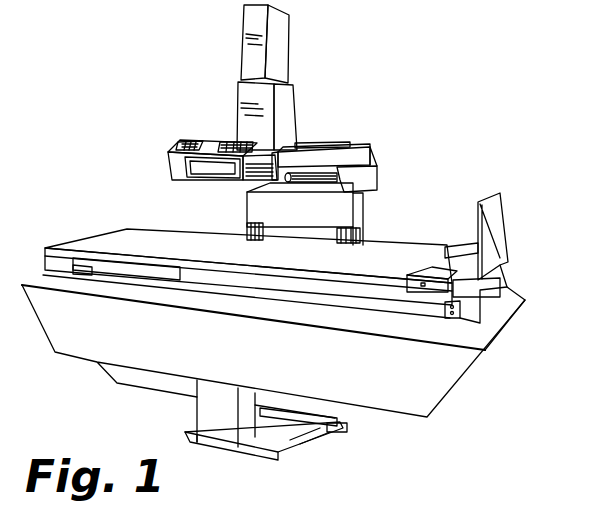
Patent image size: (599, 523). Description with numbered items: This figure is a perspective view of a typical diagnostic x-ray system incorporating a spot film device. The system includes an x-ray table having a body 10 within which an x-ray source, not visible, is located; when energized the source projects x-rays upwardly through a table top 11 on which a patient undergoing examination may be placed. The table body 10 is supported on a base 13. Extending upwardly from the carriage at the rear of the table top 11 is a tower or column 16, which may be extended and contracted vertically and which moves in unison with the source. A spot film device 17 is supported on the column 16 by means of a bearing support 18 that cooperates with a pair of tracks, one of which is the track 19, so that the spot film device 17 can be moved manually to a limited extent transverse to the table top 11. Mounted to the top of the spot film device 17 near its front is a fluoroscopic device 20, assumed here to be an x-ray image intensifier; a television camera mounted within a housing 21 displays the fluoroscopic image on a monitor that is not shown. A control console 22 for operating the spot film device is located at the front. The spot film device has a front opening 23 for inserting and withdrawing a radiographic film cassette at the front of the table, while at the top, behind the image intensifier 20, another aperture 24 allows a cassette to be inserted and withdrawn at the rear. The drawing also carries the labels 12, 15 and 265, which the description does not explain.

The table body 10 is at (450, 380).
The table top 11 is at (90, 242).
The end plate 12 is at (507, 228).
The base 13 is at (225, 438).
The end block 15 is at (428, 272).
The column 16 is at (362, 242).
The spot film device 17 is at (382, 142).
The bearing support 18 is at (380, 175).
The track 19 is at (317, 184).
The fluoroscopic device 20 is at (299, 112).
The housing 21 is at (282, 63).
The control console 22 is at (178, 143).
The front opening 23 is at (207, 167).
The aperture 24 is at (345, 145).
The slot panel 265 is at (250, 182).